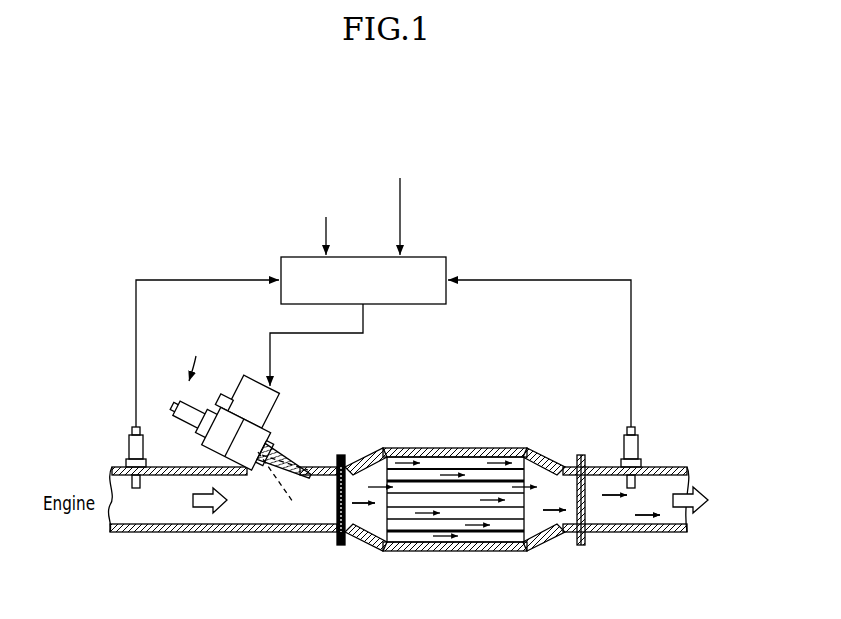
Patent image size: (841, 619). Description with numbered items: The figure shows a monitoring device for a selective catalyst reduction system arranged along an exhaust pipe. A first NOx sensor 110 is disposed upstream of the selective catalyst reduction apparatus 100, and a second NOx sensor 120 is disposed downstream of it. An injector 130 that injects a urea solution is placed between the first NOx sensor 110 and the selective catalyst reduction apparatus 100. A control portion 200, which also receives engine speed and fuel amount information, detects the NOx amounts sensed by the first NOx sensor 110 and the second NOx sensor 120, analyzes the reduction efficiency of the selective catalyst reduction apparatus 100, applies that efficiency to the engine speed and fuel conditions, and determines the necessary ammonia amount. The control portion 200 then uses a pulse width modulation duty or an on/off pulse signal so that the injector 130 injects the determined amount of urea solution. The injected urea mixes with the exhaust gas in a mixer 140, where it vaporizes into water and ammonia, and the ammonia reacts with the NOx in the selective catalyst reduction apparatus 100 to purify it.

The selective catalyst reduction apparatus 100 is at (462, 438).
The first NOx sensor 110 is at (134, 445).
The second NOx sensor 120 is at (633, 445).
The injector 130 is at (246, 430).
The mixer 140 is at (332, 517).
The control portion 200 is at (448, 264).